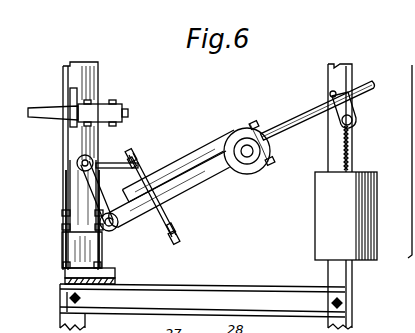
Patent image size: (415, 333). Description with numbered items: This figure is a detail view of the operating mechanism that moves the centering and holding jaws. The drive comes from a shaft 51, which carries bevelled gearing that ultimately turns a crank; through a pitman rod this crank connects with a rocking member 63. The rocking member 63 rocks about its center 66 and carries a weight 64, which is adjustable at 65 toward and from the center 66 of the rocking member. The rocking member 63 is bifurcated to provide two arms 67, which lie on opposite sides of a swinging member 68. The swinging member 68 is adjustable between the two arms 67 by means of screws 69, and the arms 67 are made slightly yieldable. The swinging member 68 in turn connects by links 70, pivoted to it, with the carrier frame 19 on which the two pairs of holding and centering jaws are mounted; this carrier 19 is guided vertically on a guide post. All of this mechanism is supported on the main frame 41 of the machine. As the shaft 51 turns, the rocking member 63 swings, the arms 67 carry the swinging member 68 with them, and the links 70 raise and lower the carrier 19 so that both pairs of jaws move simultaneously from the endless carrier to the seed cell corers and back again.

The carrier 19 is at (90, 123).
The main frame 41 is at (250, 301).
The shaft 51 is at (412, 118).
The rocking member 63 is at (223, 137).
The weight 64 is at (362, 168).
The adjustment point for weight 65 is at (332, 92).
The center of rocking member 66 is at (247, 145).
The arms 67 is at (172, 168).
The swinging member 68 is at (168, 196).
The screws 69 is at (131, 150).
The links 70 is at (65, 193).